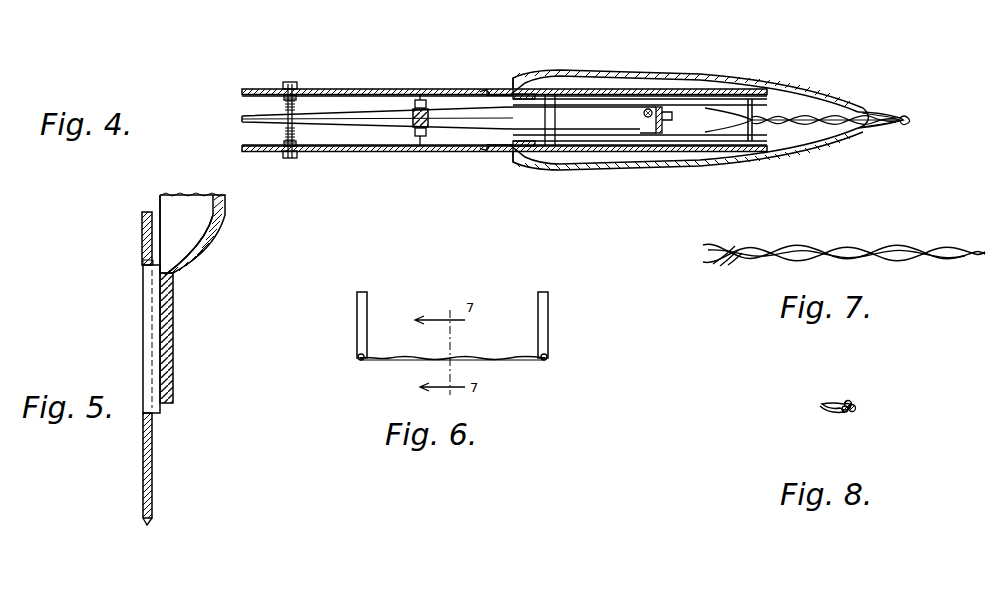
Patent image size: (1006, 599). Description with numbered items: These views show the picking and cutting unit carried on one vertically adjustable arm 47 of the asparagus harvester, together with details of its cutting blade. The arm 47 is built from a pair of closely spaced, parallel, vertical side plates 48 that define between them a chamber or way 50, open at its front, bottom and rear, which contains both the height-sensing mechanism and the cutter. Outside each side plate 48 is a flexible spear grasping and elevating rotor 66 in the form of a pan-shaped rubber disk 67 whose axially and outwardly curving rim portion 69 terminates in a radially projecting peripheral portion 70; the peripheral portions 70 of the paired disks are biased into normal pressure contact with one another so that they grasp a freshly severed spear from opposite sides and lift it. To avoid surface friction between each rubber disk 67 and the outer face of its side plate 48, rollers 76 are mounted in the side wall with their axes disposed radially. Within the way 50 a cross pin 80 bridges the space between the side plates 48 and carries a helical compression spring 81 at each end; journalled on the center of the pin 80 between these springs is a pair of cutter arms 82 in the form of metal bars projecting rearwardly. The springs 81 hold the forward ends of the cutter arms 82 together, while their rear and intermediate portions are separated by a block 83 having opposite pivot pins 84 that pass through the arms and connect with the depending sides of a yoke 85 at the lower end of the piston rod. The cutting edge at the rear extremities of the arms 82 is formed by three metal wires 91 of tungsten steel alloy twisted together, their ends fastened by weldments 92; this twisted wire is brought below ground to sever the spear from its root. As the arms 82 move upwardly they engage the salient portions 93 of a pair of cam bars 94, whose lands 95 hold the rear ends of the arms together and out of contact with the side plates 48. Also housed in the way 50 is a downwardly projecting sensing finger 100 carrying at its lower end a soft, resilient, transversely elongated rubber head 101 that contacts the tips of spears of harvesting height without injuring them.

In FIG. 4, the vertically adjustable arm 47 is at (452, 89).
In FIG. 5, the vertically adjustable arm 47 is at (136, 235).
In FIG. 4, the side plates 48 is at (402, 90).
In FIG. 5, the side plates 48 is at (142, 468).
In FIG. 4, the chamber or way 50 is at (334, 95).
In FIG. 4, the flexible spear grasping and elevating rotor 66 is at (855, 98).
In FIG. 5, the flexible spear grasping and elevating rotor 66 is at (234, 212).
In FIG. 4, the rubber disk 67 is at (816, 70).
In FIG. 4, the curving rim portion 69 is at (868, 112).
In FIG. 5, the curving rim portion 69 is at (199, 267).
In FIG. 4, the peripheral portion 70 is at (907, 119).
In FIG. 5, the peripheral portion 70 is at (174, 332).
In FIG. 5, the rollers 76 is at (141, 332).
In FIG. 4, the cross pin 80 is at (287, 83).
In FIG. 4, the helical compression spring 81 is at (284, 98).
In FIG. 4, the cutter arms 82 is at (597, 135).
In FIG. 6, the cutter arms 82 is at (356, 316).
In FIG. 4, the block 83 is at (430, 118).
In FIG. 4, the pivot pins 84 is at (419, 151).
In FIG. 4, the yoke 85 is at (421, 92).
In FIG. 4, the metal wires 91 is at (752, 111).
In FIG. 6, the metal wires 91 is at (514, 362).
In FIG. 7, the metal wires 91 is at (720, 266).
In FIG. 8, the metal wires 91 is at (828, 404).
In FIG. 6, the weldments 92 is at (356, 357).
In FIG. 4, the salient portions 93 is at (482, 88).
In FIG. 4, the cam bars 94 is at (518, 94).
In FIG. 4, the lands 95 is at (537, 105).
In FIG. 4, the sensing finger 100 is at (676, 116).
In FIG. 4, the head 101 is at (670, 123).